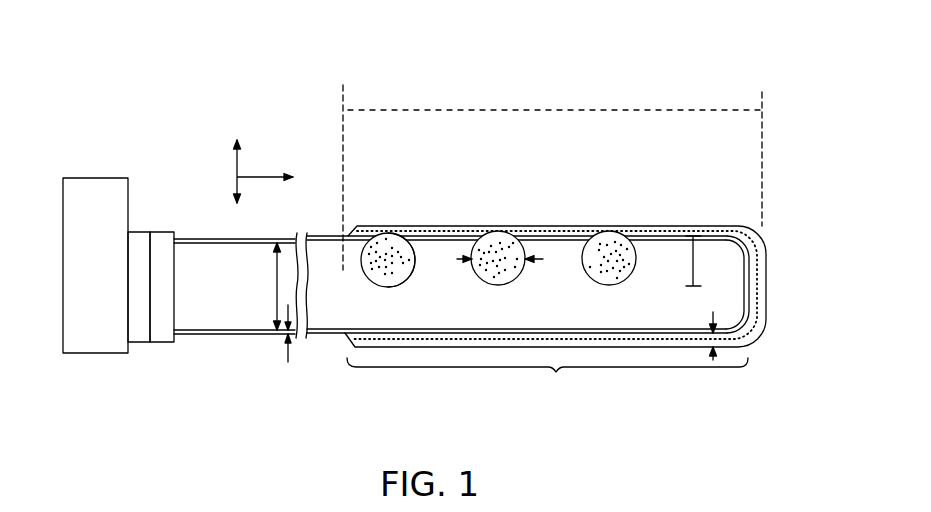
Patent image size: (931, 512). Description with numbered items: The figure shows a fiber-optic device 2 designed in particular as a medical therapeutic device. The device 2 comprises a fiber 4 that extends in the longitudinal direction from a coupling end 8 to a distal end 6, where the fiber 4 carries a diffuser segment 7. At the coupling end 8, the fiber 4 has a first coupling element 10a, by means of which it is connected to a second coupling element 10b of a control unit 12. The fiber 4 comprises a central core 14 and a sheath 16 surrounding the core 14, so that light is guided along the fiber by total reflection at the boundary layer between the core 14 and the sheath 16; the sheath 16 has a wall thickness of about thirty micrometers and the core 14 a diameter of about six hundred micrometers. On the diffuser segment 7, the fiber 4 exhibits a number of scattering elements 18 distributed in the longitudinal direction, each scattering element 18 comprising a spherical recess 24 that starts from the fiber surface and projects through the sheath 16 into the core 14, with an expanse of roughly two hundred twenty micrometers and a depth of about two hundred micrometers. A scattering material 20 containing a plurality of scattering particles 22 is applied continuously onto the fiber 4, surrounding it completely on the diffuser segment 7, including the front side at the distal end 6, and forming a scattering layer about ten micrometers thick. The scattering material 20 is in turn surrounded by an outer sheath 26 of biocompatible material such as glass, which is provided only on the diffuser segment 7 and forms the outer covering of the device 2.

The fiber-optic device 2 is at (640, 100).
The fiber 4 is at (263, 338).
The distal end 6 is at (790, 294).
The diffuser segment 7 is at (556, 372).
The coupling end 8 is at (183, 288).
The first coupling element 10a is at (160, 232).
The second coupling element 10b is at (137, 232).
The control unit 12 is at (108, 269).
The core 14 is at (346, 236).
The sheath 16 is at (318, 237).
The scattering element 18 is at (362, 285).
The scattering material 20 is at (393, 236).
The scattering particles 22 is at (400, 273).
The recess 24 is at (417, 260).
The outer sheath 26 is at (645, 227).